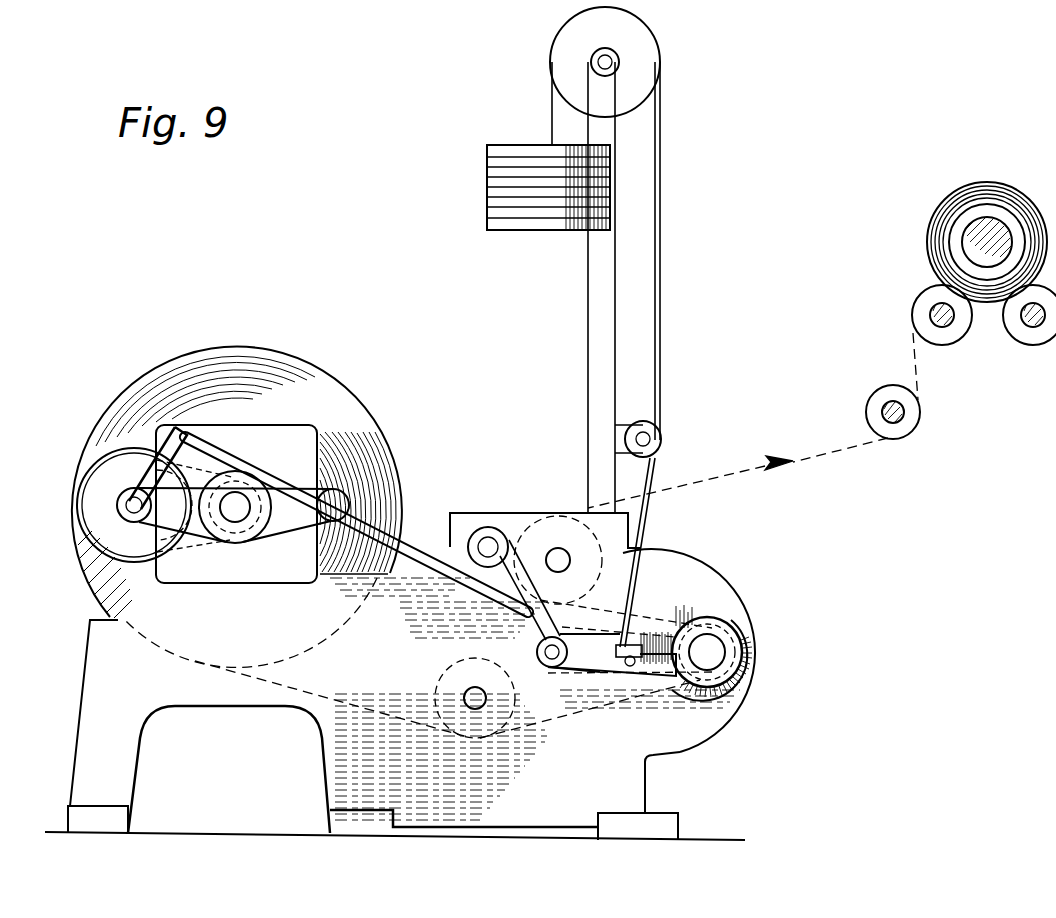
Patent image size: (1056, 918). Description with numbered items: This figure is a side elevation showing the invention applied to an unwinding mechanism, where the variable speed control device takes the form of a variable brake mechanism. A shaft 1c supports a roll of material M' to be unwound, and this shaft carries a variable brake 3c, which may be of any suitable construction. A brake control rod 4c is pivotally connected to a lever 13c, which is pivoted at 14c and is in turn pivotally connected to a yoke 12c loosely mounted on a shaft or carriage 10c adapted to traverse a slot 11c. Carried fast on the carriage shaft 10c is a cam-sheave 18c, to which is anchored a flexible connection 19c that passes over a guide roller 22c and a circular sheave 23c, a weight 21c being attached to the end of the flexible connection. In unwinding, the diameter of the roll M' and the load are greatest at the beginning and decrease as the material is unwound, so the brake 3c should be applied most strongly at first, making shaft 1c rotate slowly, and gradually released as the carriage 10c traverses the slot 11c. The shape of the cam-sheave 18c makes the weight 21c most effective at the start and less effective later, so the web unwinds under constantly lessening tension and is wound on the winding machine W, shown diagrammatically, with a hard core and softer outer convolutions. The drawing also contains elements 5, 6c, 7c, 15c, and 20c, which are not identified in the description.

The roll of material M' is at (237, 507).
The shaft 1c is at (243, 500).
The variable brake 3c is at (88, 498).
The brake control rod 4c is at (403, 550).
The web 5 is at (862, 448).
The pulley 6c is at (590, 580).
The pulley 7c is at (489, 733).
The shaft or carriage 10c is at (709, 652).
The slot 11c is at (563, 667).
The yoke 12c is at (587, 662).
The lever 13c is at (537, 637).
The pivot 14c is at (483, 545).
The link 15c is at (517, 605).
The cam-sheave 18c is at (700, 590).
The flexible connection 19c is at (662, 340).
The strap connection 20c is at (640, 663).
The weight 21c is at (490, 190).
The guide roller 22c is at (655, 428).
The circular sheave 23c is at (652, 57).
The winding machine W is at (928, 236).